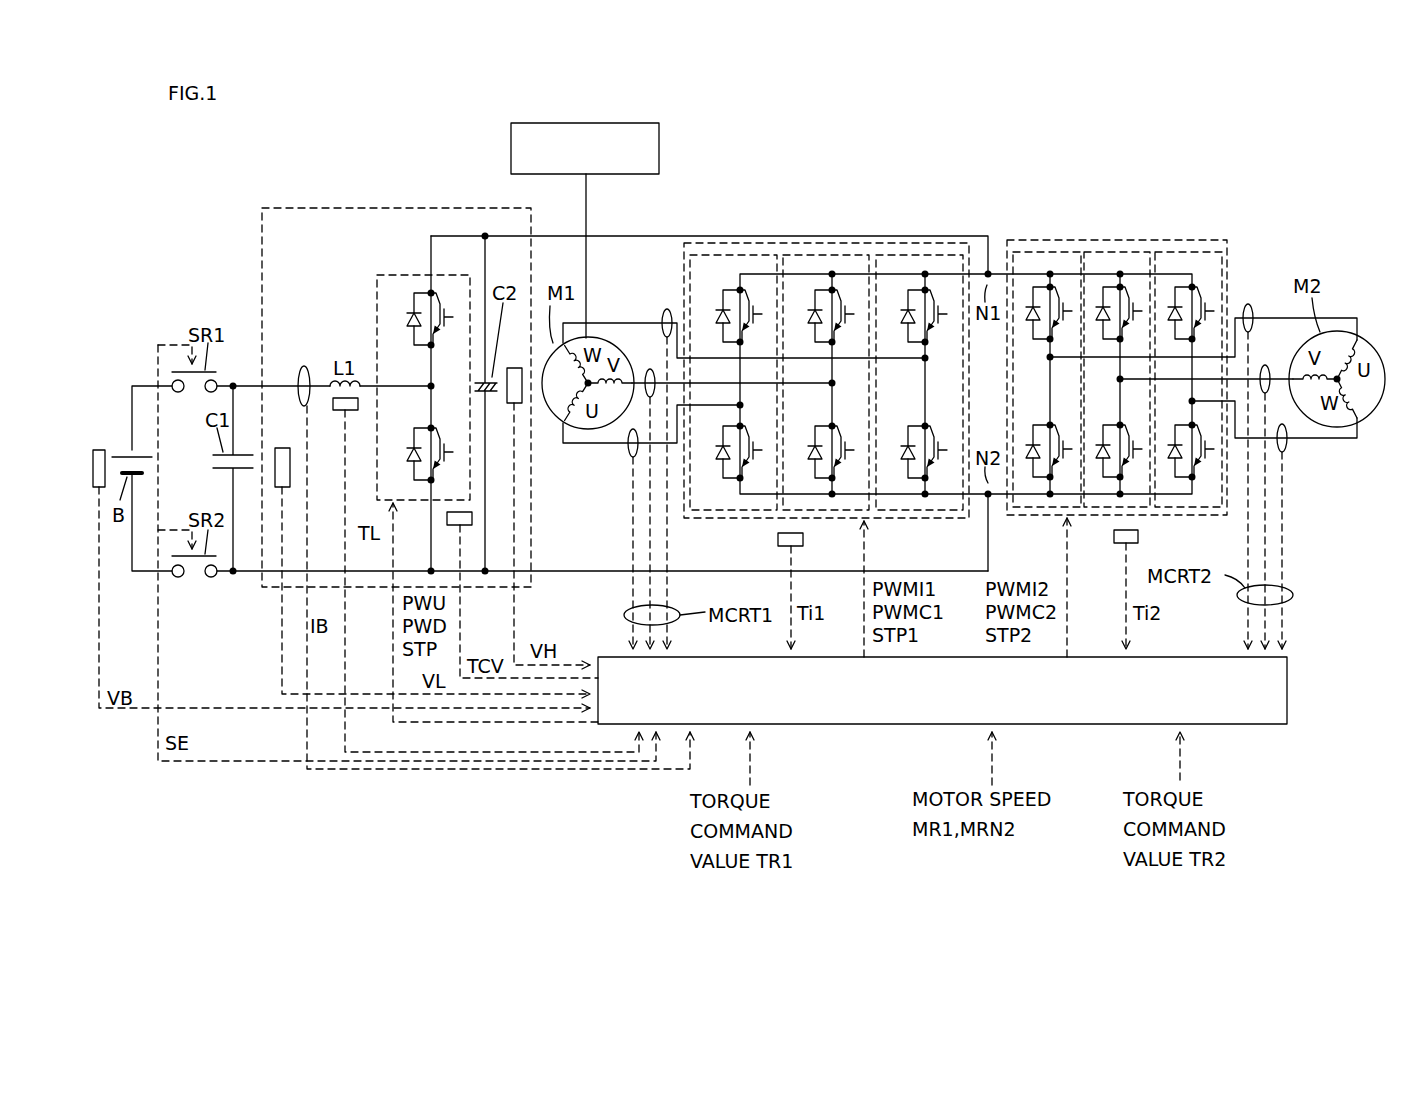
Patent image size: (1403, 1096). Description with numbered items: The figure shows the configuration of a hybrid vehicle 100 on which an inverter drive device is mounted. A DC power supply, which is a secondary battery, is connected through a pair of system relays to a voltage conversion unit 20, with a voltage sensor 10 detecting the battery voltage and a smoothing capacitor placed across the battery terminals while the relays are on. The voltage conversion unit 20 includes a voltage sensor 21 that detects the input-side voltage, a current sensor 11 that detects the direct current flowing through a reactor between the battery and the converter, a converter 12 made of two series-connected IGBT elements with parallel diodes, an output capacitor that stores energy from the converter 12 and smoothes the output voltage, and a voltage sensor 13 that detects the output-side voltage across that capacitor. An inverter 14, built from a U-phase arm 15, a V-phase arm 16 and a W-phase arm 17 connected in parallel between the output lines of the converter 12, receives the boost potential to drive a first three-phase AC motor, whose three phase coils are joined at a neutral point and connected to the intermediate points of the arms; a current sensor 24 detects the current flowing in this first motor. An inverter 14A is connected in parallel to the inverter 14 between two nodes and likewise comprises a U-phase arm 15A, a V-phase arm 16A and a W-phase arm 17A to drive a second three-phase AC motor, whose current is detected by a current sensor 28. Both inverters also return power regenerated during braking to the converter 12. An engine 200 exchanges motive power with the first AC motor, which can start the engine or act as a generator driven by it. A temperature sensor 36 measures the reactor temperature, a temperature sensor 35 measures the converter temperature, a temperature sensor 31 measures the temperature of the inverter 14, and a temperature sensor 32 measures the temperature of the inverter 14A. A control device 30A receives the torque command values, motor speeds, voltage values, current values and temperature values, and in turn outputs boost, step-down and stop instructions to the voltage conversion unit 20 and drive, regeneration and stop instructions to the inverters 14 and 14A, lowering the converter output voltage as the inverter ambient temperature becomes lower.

The vehicle 100 is at (915, 142).
The engine 200 is at (662, 147).
The voltage sensor 10 is at (98, 448).
The current sensor 11 is at (303, 373).
The converter 12 is at (400, 272).
The voltage sensor 13 is at (513, 367).
The inverter 14 is at (955, 240).
The U-phase arm 15 is at (710, 253).
The V-phase arm 16 is at (804, 253).
The W-phase arm 17 is at (905, 253).
The inverter 14A is at (1213, 240).
The U-phase arm 15A is at (1025, 250).
The V-phase arm 16A is at (1100, 250).
The W-phase arm 17A is at (1168, 250).
The voltage conversion unit 20 is at (472, 207).
The voltage sensor 21 is at (282, 447).
The current sensor 24 is at (667, 308).
The current sensor 28 is at (1248, 304).
The temperature sensor 31 is at (778, 537).
The temperature sensor 32 is at (1140, 537).
The temperature sensor 35 is at (466, 526).
The temperature sensor 36 is at (333, 412).
The control device 30A is at (1288, 690).